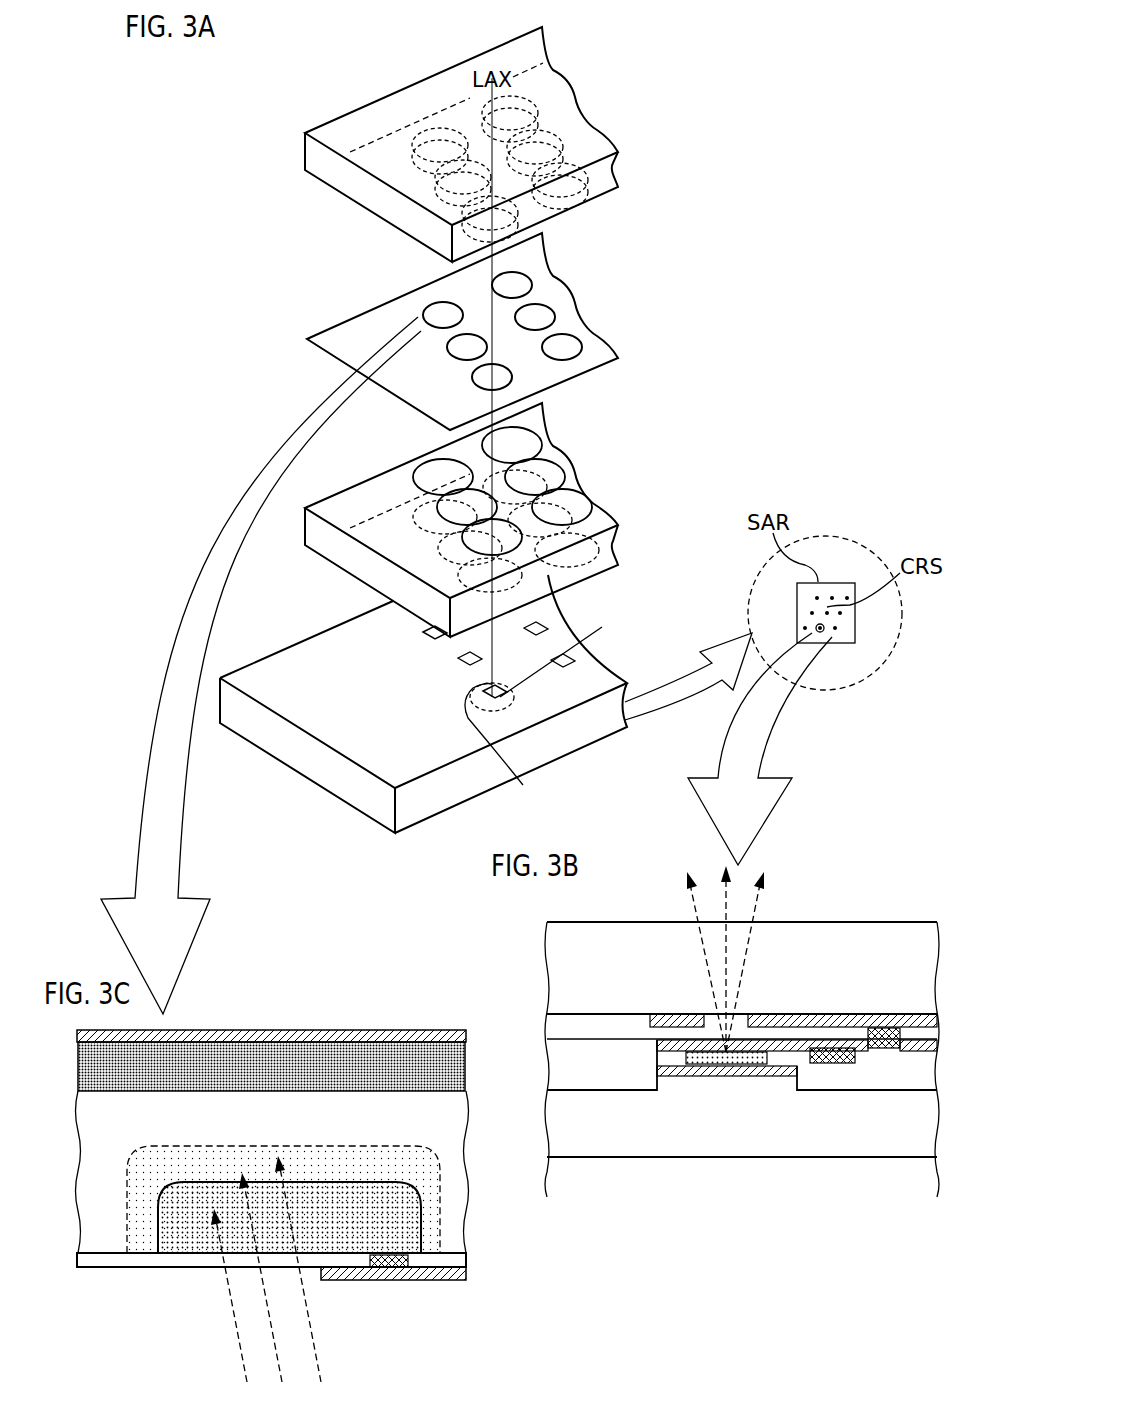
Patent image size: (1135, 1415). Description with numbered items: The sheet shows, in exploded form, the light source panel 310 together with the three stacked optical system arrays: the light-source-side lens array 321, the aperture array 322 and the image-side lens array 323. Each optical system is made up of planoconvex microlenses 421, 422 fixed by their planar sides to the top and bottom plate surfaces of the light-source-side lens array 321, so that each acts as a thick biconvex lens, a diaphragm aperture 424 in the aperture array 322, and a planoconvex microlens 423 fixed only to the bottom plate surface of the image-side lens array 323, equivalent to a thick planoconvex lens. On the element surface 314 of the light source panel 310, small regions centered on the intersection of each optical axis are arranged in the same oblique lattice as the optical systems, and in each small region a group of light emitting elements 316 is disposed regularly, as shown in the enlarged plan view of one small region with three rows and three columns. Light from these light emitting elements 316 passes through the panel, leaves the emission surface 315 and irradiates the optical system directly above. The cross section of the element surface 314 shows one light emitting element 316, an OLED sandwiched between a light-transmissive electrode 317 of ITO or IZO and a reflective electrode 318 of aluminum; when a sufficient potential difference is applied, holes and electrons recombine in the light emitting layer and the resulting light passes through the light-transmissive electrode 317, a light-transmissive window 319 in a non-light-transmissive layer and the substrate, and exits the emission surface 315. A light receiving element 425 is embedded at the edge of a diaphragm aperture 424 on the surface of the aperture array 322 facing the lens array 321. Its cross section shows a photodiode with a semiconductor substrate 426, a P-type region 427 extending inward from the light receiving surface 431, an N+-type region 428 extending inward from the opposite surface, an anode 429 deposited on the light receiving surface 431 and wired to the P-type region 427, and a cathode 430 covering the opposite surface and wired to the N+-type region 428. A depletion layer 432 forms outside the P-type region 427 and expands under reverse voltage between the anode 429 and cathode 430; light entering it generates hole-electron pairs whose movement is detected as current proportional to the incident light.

In FIG. 3A, the light source panel 310 is at (568, 736).
In FIG. 3B, the light source panel 310 is at (697, 1029).
In FIG. 3B, the element surface 314 is at (598, 1157).
In FIG. 3A, the emission surface 315 is at (385, 753).
In FIG. 3B, the emission surface 315 is at (601, 920).
In FIG. 3A, the light emitting element 316 is at (822, 632).
In FIG. 3B, the light emitting element 316 is at (767, 1054).
In FIG. 3B, the light-transmissive electrode 317 is at (792, 1040).
In FIG. 3B, the reflective electrode 318 is at (736, 1077).
In FIG. 3B, the light-transmissive window 319 is at (735, 1040).
In FIG. 3A, the light-source-side lens array 321 is at (478, 521).
In FIG. 3A, the aperture array 322 is at (461, 331).
In FIG. 3A, the image-side lens array 323 is at (355, 127).
In FIG. 3A, the planoconvex microlens 421 is at (425, 596).
In FIG. 3A, the planoconvex microlens 422 is at (583, 490).
In FIG. 3A, the planoconvex microlens 423 is at (530, 253).
In FIG. 3A, the diaphragm aperture 424 is at (520, 373).
In FIG. 3A, the light receiving element 425 is at (415, 328).
In FIG. 3C, the light receiving element 425 is at (278, 1186).
In FIG. 3C, the semiconductor substrate 426 is at (432, 1120).
In FIG. 3C, the P-type region 427 is at (400, 1227).
In FIG. 3C, the N+-type region 428 is at (413, 1055).
In FIG. 3C, the anode 429 is at (382, 1273).
In FIG. 3C, the cathode 430 is at (333, 1030).
In FIG. 3C, the light receiving surface 431 is at (102, 1270).
In FIG. 3C, the depletion layer 432 is at (410, 1157).